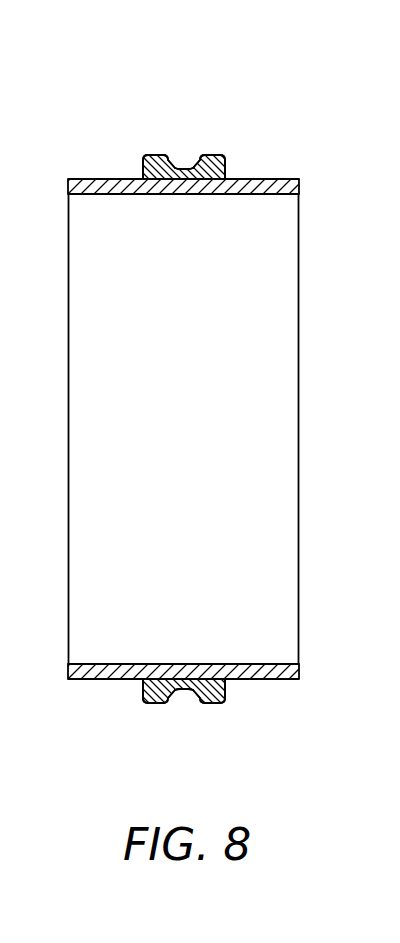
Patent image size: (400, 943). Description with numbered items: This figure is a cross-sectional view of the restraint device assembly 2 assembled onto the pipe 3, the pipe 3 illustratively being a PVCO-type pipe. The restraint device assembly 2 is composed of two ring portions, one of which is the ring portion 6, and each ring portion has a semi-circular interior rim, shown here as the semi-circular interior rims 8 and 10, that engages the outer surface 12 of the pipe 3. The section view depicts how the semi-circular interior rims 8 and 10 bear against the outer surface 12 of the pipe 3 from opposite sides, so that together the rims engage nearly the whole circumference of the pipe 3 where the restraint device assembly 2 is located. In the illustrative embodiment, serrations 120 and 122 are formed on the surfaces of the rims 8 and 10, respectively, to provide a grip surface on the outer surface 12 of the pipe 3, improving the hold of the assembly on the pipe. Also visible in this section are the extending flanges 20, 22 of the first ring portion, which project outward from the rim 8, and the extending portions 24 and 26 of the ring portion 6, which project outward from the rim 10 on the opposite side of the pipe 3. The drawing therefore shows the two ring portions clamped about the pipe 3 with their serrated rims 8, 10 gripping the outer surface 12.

The restraint device assembly 2 is at (294, 141).
The pipe 3 is at (334, 343).
The ring portion 6 is at (72, 717).
The semi-circular interior rim 8 is at (201, 180).
The semi-circular interior rim 10 is at (163, 679).
The outer surface 12 is at (86, 179).
The extending flange 20 is at (157, 156).
The extending flange 22 is at (210, 156).
The extending portion 24 is at (151, 703).
The extending portion 26 is at (213, 703).
The serrations 120 is at (163, 180).
The serrations 122 is at (208, 679).